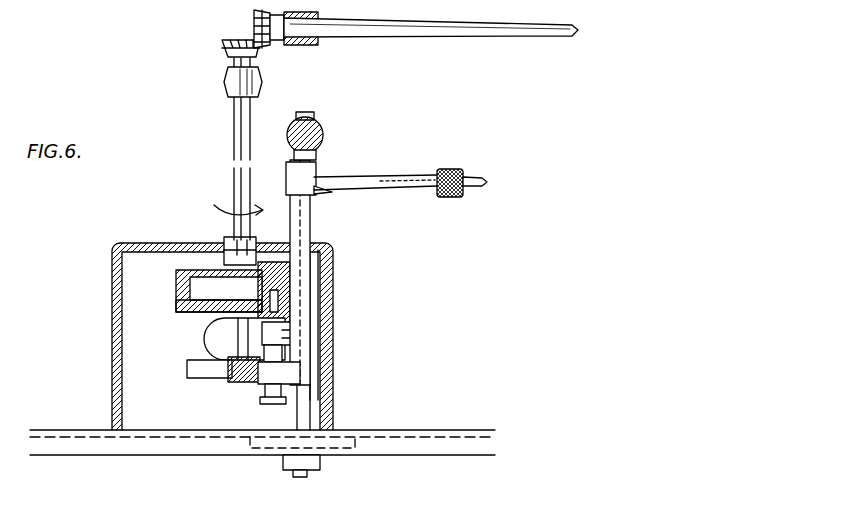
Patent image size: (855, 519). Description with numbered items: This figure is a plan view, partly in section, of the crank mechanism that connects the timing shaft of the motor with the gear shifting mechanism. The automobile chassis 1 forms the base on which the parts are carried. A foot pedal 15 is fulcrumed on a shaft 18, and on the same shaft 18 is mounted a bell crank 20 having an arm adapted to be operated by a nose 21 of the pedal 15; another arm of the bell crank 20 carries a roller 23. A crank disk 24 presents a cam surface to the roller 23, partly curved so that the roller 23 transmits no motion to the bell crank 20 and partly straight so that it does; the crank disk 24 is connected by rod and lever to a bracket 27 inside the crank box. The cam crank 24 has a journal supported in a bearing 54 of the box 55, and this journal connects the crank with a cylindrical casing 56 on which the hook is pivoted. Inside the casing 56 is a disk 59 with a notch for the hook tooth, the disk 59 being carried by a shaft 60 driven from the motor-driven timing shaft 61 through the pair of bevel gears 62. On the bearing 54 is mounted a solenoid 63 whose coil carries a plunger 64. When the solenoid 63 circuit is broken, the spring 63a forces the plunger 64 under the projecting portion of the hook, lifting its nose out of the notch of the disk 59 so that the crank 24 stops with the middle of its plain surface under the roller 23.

The chassis 1 is at (385, 432).
The foot pedal 15 is at (387, 176).
The shaft 18 is at (306, 407).
The bell crank 20 is at (312, 210).
The nose 21 is at (320, 190).
The roller 23 is at (232, 370).
The crank disk 24 is at (187, 367).
The bracket 27 is at (332, 330).
The bearing 54 is at (215, 340).
The box 55 is at (117, 330).
The cylindrical casing 56 is at (178, 297).
The disk 59 is at (200, 283).
The shaft 60 is at (232, 148).
The timing shaft 61 is at (411, 31).
The bevel gears 62 is at (262, 46).
The solenoid 63 is at (285, 325).
The spring 63a is at (290, 357).
The plunger 64 is at (285, 300).